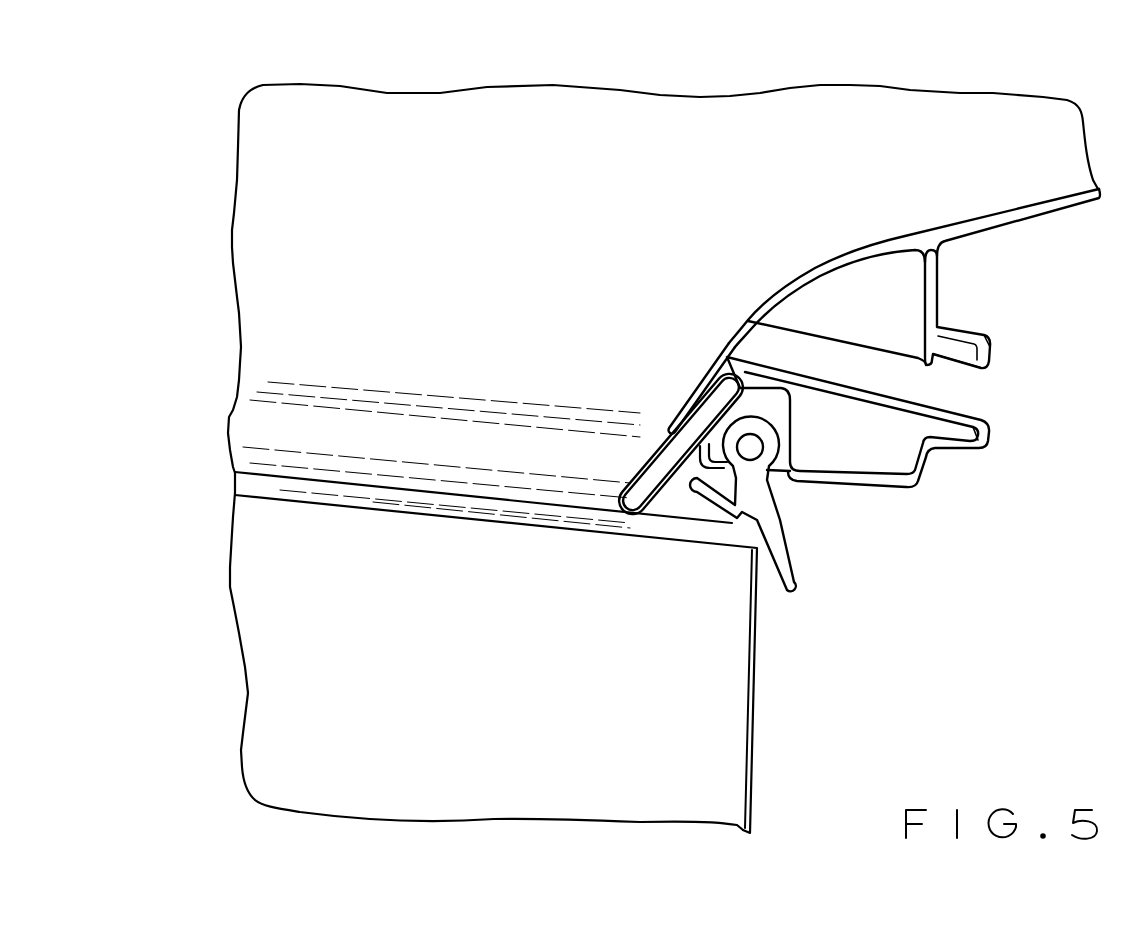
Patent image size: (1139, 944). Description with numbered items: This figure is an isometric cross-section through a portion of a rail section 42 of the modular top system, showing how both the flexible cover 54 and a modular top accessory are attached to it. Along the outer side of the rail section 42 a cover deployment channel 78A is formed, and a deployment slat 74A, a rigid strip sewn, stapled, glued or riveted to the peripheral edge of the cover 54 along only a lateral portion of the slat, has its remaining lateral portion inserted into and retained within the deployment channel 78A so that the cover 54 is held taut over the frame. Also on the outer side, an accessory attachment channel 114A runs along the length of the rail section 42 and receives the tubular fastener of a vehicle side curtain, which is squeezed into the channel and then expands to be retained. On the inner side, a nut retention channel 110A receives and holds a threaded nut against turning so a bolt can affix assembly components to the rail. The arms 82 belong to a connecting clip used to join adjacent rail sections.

The cover 54 is at (983, 133).
The longitudinal arms 82 is at (883, 310).
The nut retention channel 110A is at (972, 380).
The rail section 42 is at (824, 427).
The accessory attachment channel 114A is at (775, 410).
The cover deployment channel 78A is at (693, 379).
The deployment slat 74A is at (657, 468).